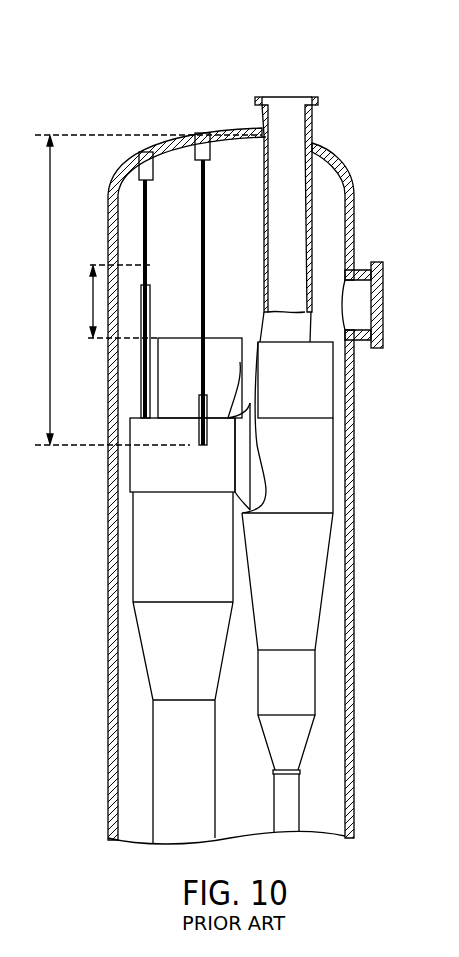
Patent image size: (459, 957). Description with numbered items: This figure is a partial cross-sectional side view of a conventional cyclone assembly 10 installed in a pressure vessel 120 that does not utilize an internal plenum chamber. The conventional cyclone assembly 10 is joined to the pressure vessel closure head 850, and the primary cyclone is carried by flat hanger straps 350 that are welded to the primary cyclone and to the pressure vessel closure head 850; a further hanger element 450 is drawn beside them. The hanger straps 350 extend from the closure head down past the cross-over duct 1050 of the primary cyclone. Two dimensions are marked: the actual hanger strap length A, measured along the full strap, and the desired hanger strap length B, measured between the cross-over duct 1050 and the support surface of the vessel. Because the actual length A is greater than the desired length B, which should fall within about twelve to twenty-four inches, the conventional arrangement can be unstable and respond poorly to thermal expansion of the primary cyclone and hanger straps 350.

The conventional cyclone assembly 10 is at (148, 69).
The pressure vessel 120 is at (352, 542).
The hanger strap 350 is at (143, 255).
The second tube 450 is at (262, 180).
The pressure vessel closure head 850 is at (330, 170).
The cross-over duct 1050 is at (222, 352).
The actual hanger strap length A is at (49, 290).
The desired hanger strap length B is at (92, 301).